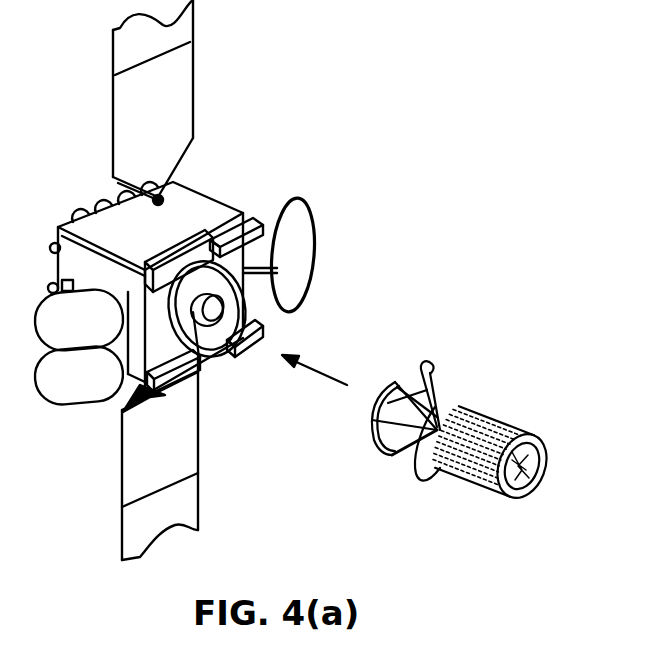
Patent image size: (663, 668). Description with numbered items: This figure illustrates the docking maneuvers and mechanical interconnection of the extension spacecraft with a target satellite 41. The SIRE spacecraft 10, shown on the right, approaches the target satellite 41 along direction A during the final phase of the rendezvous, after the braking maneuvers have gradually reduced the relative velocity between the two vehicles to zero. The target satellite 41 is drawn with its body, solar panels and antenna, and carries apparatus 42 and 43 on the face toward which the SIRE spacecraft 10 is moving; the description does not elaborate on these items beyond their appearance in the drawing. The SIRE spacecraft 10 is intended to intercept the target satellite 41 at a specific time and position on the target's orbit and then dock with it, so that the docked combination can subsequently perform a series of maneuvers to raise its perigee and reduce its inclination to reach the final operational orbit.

The target satellite 41 is at (195, 203).
The lens barrel 42 is at (199, 357).
The camera lens unit 43 is at (212, 343).
The SIRE spacecraft 10 is at (503, 418).
The direction of movement A is at (317, 363).